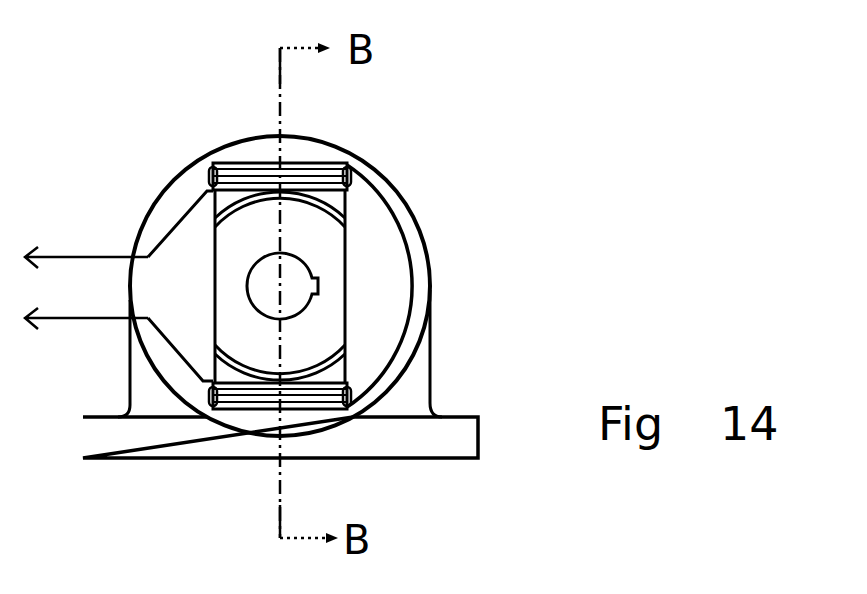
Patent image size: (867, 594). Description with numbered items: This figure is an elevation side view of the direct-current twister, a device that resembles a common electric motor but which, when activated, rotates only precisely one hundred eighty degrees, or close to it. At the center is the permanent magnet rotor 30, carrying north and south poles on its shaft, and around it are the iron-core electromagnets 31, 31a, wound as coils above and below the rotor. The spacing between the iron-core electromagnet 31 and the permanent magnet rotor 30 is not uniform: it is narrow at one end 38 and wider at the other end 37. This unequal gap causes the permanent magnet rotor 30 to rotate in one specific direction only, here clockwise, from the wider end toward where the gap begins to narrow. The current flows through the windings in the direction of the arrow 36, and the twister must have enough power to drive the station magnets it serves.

The permanent magnet rotor 30 is at (337, 287).
The iron-core electromagnet 31 is at (317, 152).
The iron-core electromagnet 31a is at (235, 413).
The arrow 36 is at (107, 255).
The wider end 37 is at (343, 210).
The narrow end 38 is at (352, 352).